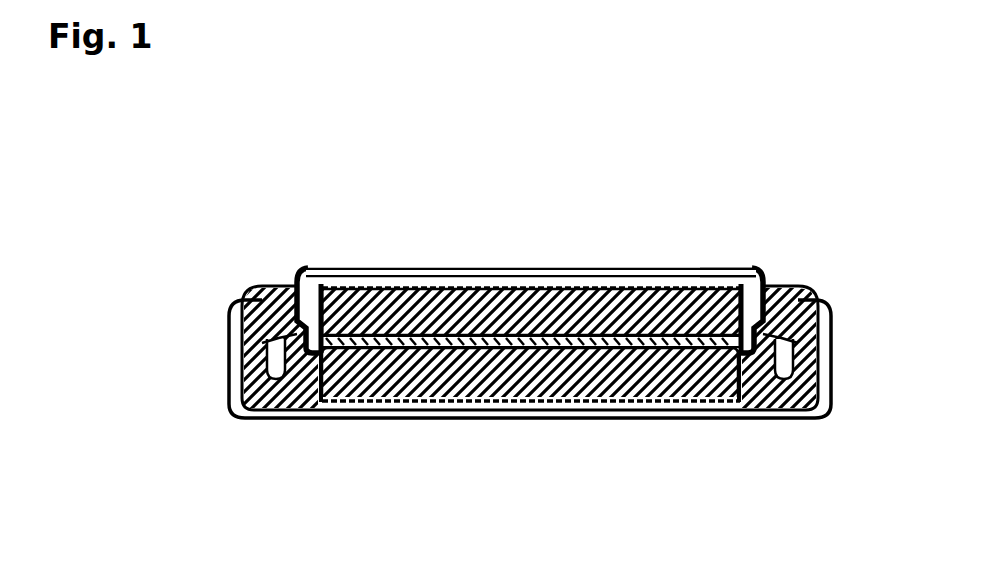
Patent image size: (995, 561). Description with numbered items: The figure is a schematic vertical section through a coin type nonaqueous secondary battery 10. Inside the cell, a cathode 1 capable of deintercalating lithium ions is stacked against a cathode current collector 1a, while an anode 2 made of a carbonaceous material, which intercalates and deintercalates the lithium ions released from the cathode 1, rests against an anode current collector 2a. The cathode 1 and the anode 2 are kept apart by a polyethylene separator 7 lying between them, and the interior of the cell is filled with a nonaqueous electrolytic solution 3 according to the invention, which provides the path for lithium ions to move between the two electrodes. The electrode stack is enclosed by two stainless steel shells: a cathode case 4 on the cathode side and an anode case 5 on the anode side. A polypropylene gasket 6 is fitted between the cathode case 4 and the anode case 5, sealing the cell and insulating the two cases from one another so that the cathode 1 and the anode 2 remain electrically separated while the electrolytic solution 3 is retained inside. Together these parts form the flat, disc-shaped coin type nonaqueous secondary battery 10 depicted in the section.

The coin type nonaqueous secondary battery 10 is at (631, 246).
The cathode 1 is at (465, 373).
The cathode current collector 1a is at (377, 408).
The anode 2 is at (583, 270).
The anode current collector 2a is at (450, 280).
The nonaqueous electrolytic solution 3 is at (307, 268).
The cathode case 4 is at (603, 412).
The anode case 5 is at (713, 272).
The gasket 6 is at (257, 420).
The separator 7 is at (660, 346).